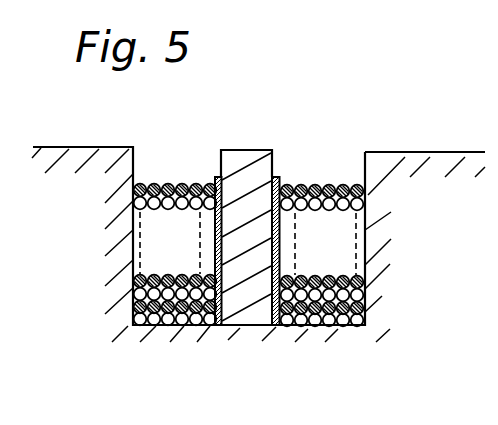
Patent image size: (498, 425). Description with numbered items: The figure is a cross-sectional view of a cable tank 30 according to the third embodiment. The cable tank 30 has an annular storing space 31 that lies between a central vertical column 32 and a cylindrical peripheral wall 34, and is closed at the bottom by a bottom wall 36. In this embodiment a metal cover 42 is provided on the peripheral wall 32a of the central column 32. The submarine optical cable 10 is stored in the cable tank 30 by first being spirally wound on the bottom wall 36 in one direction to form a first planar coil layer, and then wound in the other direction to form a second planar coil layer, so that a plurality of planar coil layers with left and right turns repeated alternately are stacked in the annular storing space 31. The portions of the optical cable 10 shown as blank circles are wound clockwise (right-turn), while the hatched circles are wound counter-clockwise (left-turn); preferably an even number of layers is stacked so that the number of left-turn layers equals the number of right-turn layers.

The optical cable 10 is at (363, 292).
The cable tank 30 is at (307, 163).
The annular storing space 31 is at (185, 175).
The central vertical column 32 is at (246, 147).
The peripheral wall of the central column 32a is at (277, 165).
The cylindrical peripheral wall 34 is at (368, 154).
The bottom wall 36 is at (285, 327).
The metal cover 42 is at (282, 244).